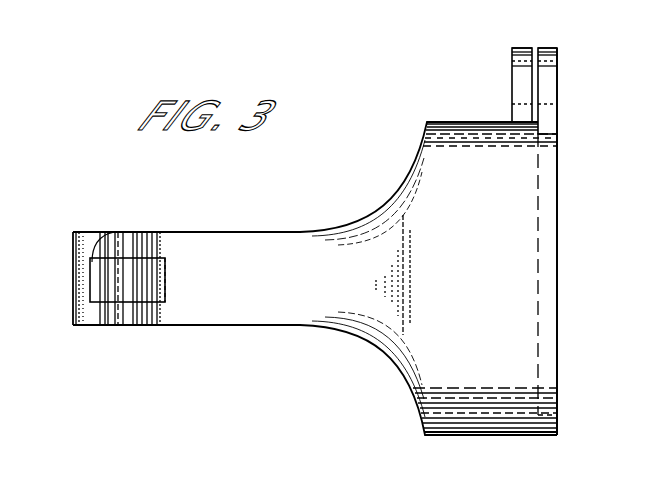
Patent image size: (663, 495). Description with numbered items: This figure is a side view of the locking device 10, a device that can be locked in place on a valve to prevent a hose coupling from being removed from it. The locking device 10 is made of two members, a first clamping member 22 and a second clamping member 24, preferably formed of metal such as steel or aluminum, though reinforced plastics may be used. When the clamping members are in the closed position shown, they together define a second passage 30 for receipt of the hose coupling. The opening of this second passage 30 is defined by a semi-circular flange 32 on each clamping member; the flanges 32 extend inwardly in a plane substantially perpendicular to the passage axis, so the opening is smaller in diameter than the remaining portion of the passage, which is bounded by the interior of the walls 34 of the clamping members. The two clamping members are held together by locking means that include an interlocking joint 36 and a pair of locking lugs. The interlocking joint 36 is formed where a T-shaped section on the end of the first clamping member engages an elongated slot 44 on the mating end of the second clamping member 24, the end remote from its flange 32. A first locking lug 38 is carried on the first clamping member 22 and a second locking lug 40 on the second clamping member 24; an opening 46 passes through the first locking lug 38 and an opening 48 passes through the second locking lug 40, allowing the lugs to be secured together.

The locking device 10 is at (222, 329).
The first clamping member 22 is at (352, 309).
The second clamping member 24 is at (73, 246).
The second passage 30 is at (558, 252).
The semi-circular flange 32 is at (541, 306).
The wall 34 is at (515, 333).
The interlocking joint 36 is at (89, 279).
The first locking lug 38 is at (558, 60).
The second locking lug 40 is at (521, 47).
The elongated slot 44 is at (97, 258).
The opening 46 is at (559, 89).
The opening 48 is at (512, 82).